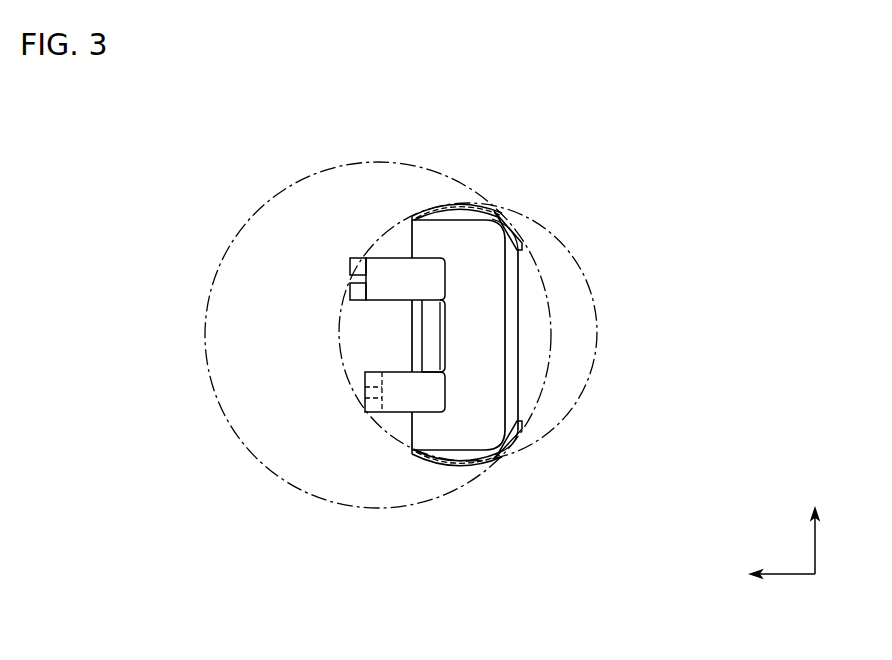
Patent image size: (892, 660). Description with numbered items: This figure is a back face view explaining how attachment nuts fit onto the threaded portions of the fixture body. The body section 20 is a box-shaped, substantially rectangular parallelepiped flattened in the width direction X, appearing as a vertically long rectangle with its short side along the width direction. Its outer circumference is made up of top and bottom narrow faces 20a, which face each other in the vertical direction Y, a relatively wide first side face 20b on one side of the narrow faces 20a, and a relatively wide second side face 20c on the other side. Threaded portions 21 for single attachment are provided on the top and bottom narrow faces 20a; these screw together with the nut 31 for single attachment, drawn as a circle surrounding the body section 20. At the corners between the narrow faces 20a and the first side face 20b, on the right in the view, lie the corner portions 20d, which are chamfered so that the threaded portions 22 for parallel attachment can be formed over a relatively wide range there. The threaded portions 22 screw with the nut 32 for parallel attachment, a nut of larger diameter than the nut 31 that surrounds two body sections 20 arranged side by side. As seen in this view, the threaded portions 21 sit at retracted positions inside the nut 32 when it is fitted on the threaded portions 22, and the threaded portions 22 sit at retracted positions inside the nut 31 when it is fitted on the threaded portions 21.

The body section 20 is at (479, 343).
The narrow faces 20a is at (453, 205).
The first side face 20b is at (522, 366).
The second side face 20c is at (412, 343).
The corner portions 20d is at (515, 224).
The threaded portions for single attachment 21 is at (463, 338).
The threaded portions for parallel attachment 22 is at (592, 337).
The nut for single attachment 31 is at (395, 236).
The nut for parallel attachment 32 is at (300, 182).